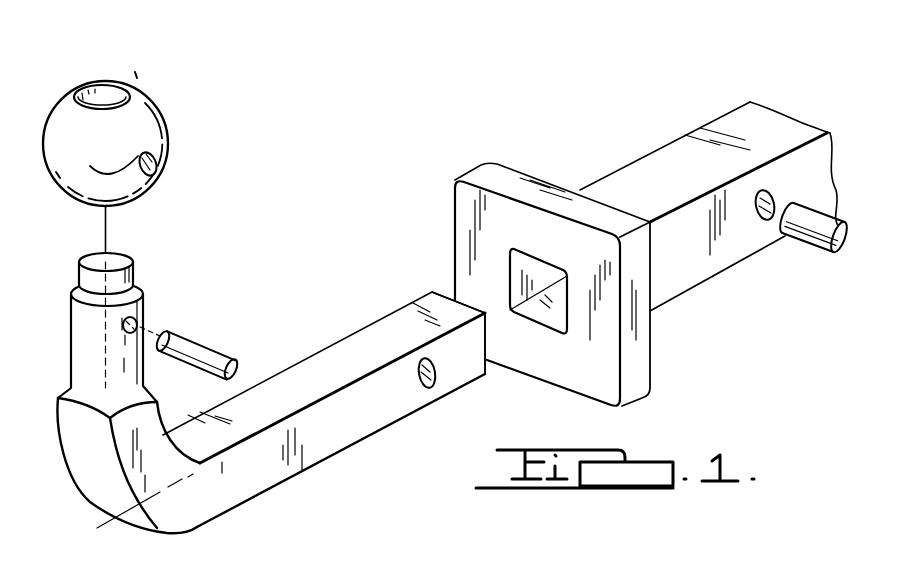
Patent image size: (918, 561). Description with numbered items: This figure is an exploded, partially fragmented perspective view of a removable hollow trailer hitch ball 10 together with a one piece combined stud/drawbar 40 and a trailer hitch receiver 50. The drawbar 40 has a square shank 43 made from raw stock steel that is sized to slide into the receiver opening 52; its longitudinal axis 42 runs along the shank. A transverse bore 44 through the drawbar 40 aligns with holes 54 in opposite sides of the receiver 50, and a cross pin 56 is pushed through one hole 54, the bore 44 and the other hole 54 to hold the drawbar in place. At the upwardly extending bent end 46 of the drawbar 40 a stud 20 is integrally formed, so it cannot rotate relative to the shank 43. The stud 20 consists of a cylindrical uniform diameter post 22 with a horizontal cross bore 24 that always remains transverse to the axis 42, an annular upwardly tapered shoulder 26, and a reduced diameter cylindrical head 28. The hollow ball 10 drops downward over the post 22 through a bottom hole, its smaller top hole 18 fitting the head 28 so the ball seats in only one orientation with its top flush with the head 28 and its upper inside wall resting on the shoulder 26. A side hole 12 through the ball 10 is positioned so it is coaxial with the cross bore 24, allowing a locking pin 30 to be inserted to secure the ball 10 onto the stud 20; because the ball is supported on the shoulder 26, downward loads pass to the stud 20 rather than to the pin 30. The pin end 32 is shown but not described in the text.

The hollow trailer hitch ball 10 is at (160, 115).
The side hole of hitch ball 12 is at (153, 165).
The top hole 18 is at (108, 88).
The stud 20 is at (142, 300).
The post 22 is at (83, 357).
The cross bore 24 is at (140, 322).
The shoulder 26 is at (90, 296).
The head 28 is at (85, 282).
The locking pin 30 is at (194, 346).
The pin end 32 is at (222, 363).
The combined stud/drawbar 40 is at (337, 342).
The longitudinal axis 42 is at (222, 463).
The shank 43 is at (470, 370).
The transverse bore 44 is at (427, 388).
The bent end 46 is at (85, 438).
The trailer hitch receiver 50 is at (636, 150).
The receiver opening 52 is at (508, 258).
The receiver holes 54 is at (768, 217).
The cross pin 56 is at (826, 242).